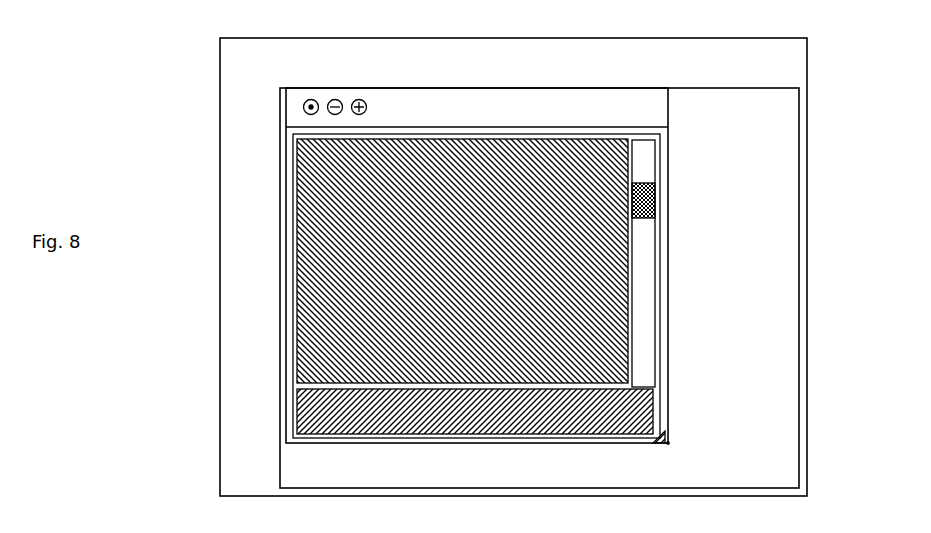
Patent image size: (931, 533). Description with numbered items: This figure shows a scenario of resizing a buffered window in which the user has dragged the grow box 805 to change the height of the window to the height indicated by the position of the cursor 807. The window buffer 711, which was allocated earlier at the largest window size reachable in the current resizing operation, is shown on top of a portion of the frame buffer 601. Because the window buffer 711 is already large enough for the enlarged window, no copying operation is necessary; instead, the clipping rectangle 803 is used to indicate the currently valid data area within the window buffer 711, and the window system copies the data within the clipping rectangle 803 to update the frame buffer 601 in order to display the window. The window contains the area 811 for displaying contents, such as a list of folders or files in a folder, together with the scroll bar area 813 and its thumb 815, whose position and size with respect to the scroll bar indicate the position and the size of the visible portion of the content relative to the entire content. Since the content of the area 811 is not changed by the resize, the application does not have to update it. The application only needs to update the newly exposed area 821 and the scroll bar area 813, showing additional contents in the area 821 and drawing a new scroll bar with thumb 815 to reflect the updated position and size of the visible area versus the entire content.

The frame buffer 601 is at (768, 37).
The window buffer 711 is at (760, 87).
The clipping rectangle 803 is at (668, 128).
The grow box 805 is at (654, 440).
The cursor 807 is at (670, 448).
The area 811 is at (570, 140).
The scroll bar area 813 is at (656, 315).
The thumb 815 is at (654, 219).
The area 821 is at (655, 398).